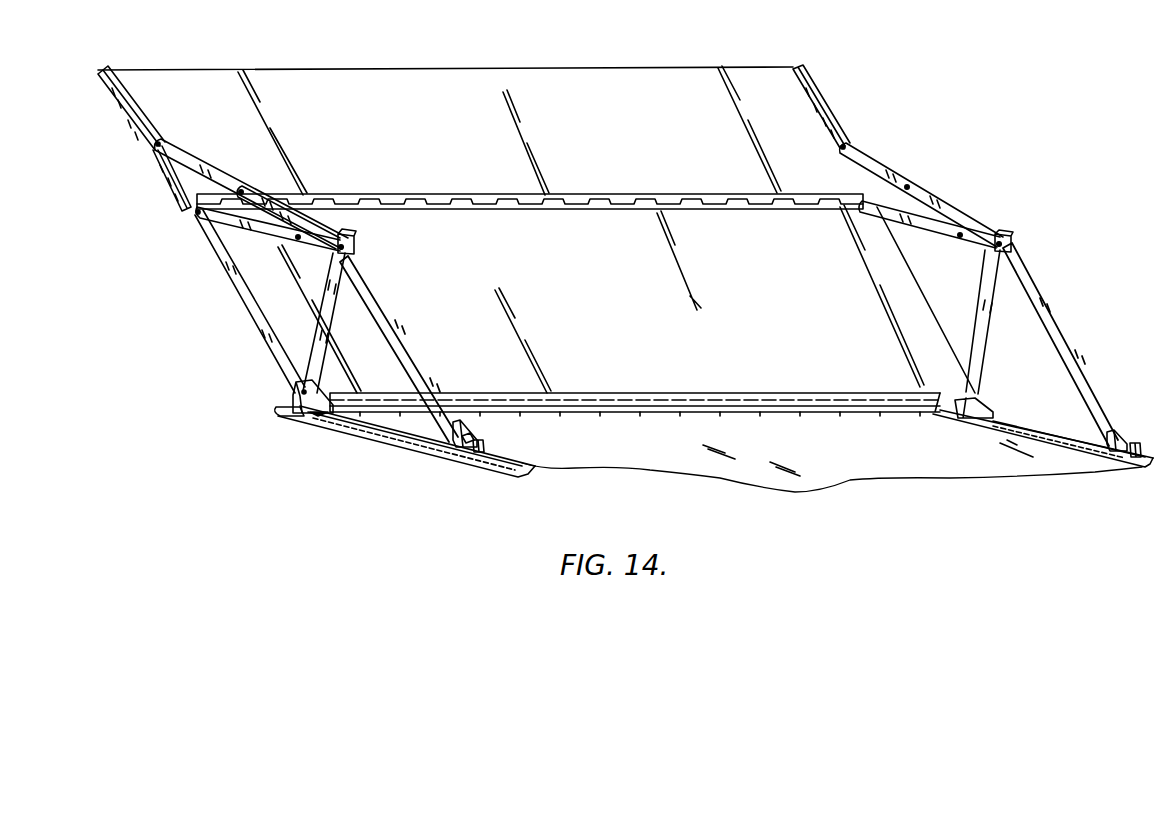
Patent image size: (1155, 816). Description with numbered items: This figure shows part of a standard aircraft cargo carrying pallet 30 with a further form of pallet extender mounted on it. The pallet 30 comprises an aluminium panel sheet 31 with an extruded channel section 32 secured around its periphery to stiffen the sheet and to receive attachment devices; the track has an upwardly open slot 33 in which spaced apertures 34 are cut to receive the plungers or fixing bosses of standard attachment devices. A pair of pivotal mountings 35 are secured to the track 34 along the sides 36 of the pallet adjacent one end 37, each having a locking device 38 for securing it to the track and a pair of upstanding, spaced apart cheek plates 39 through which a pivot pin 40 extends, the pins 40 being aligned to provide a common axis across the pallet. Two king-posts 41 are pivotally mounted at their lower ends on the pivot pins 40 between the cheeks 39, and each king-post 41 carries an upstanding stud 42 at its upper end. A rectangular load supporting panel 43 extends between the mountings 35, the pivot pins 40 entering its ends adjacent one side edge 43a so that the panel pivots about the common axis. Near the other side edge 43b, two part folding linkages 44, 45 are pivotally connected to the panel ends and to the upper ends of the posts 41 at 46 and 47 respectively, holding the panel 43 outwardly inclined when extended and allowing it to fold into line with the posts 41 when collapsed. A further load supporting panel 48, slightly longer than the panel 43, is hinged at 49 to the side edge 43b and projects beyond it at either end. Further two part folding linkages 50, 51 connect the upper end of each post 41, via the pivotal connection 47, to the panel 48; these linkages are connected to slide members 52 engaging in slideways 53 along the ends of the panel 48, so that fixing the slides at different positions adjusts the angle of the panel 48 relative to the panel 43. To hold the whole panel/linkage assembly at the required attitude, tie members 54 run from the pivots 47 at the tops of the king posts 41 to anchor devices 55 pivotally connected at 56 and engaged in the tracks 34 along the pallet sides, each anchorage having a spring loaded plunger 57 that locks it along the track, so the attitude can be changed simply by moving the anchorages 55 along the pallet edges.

The aircraft cargo carrying pallet 30 is at (580, 470).
The aluminium panel sheet 31 is at (297, 400).
The extruded channel section 32 is at (390, 438).
The upwardly open slot 33 is at (407, 437).
The spaced apertures 34 is at (433, 448).
The pivotal mountings 35 is at (297, 415).
The sides of the pallet 36 is at (715, 451).
The end of the pallet 37 is at (605, 415).
The locking device 38 is at (327, 413).
The cheek plates 39 is at (307, 383).
The pivot pin 40 is at (296, 387).
The king-posts 41 is at (317, 328).
The upstanding stud 42 is at (350, 235).
The rectangular load supporting panel 43 is at (252, 321).
The side edge of the panel 43a is at (635, 398).
The other side edge of the panel 43b is at (553, 211).
The two part folding linkage 44 is at (240, 220).
The two part folding linkage 45 is at (312, 250).
The pivotal connection 46 is at (197, 215).
The pivotal connection 47 is at (353, 253).
The further load supporting panel 48 is at (167, 190).
The hinge 49 is at (530, 199).
The two part folding linkage 50 is at (202, 163).
The two part folding linkage 51 is at (280, 207).
The slide members 52 is at (155, 146).
The slideways 53 is at (127, 100).
The tie members 54 is at (393, 328).
The anchor devices 55 is at (467, 435).
The pivotal connection 56 is at (460, 440).
The spring loaded plunger 57 is at (480, 440).